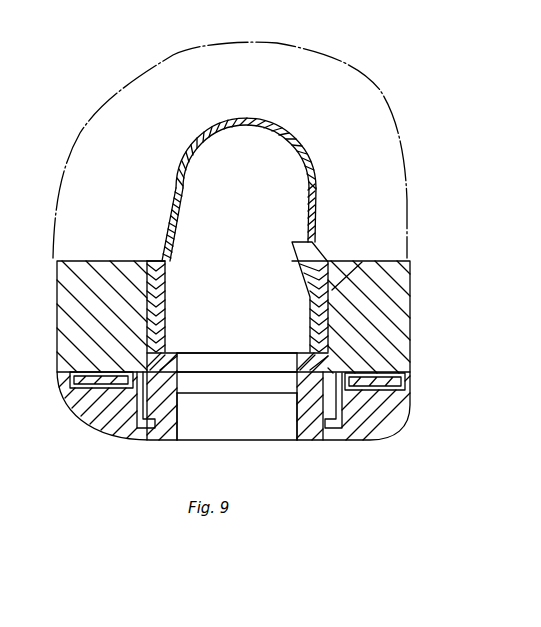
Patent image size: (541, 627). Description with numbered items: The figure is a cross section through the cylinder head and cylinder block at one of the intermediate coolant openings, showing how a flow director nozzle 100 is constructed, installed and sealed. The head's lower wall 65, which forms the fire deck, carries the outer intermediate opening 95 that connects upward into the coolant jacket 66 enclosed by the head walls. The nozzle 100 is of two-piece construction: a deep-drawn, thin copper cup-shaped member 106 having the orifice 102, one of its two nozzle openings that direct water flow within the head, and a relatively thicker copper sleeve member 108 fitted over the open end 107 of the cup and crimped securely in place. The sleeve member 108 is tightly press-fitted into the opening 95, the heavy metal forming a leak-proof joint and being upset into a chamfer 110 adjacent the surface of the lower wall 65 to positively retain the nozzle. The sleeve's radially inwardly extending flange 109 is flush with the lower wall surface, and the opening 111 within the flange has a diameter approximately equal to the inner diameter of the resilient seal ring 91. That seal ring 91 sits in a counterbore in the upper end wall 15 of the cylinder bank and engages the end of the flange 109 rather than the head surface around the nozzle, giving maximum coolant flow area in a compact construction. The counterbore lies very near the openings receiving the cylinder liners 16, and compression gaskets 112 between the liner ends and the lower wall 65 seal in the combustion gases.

The coolant jacket 66 is at (383, 122).
The lower wall 65 is at (261, 338).
The cylinder liner 16 is at (107, 418).
The flow director nozzle 100 is at (285, 133).
The nozzle opening 102 is at (315, 197).
The cup-shaped member 106 is at (175, 200).
The outer intermediate opening 95 is at (165, 298).
The sleeve member 108 is at (347, 265).
The chamfer 110 is at (165, 350).
The flange 109 is at (307, 353).
The opening 111 is at (243, 353).
The open end 107 is at (233, 355).
The seal ring 91 is at (198, 383).
The compression gasket 112 is at (98, 378).
The upper end wall 15 is at (330, 368).